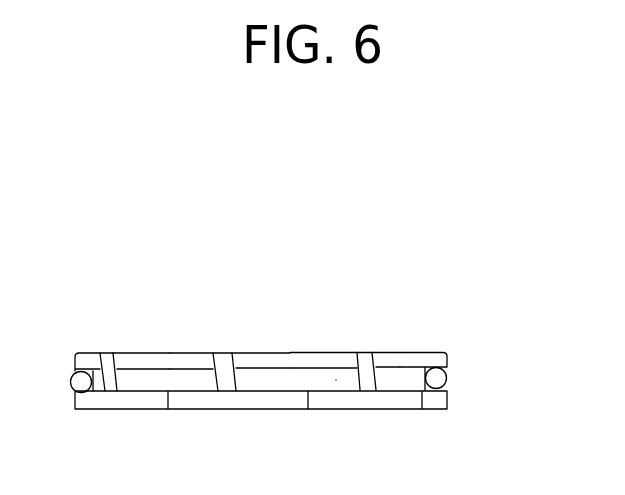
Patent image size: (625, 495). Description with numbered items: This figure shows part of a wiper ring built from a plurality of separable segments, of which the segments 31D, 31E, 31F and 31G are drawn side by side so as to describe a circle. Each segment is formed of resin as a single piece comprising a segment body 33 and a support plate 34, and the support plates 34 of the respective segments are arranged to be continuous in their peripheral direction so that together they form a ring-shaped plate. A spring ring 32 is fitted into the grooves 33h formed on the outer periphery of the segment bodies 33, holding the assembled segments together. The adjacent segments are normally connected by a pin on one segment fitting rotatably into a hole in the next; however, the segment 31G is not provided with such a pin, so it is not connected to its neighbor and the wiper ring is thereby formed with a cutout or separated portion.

The segment 31D is at (443, 352).
The segment 31E is at (310, 352).
The segment 31F is at (183, 352).
The segment 31G is at (87, 352).
The spring ring 32 is at (442, 377).
The segment body 33 is at (150, 352).
The groove 33h is at (335, 378).
The support plate 34 is at (123, 409).